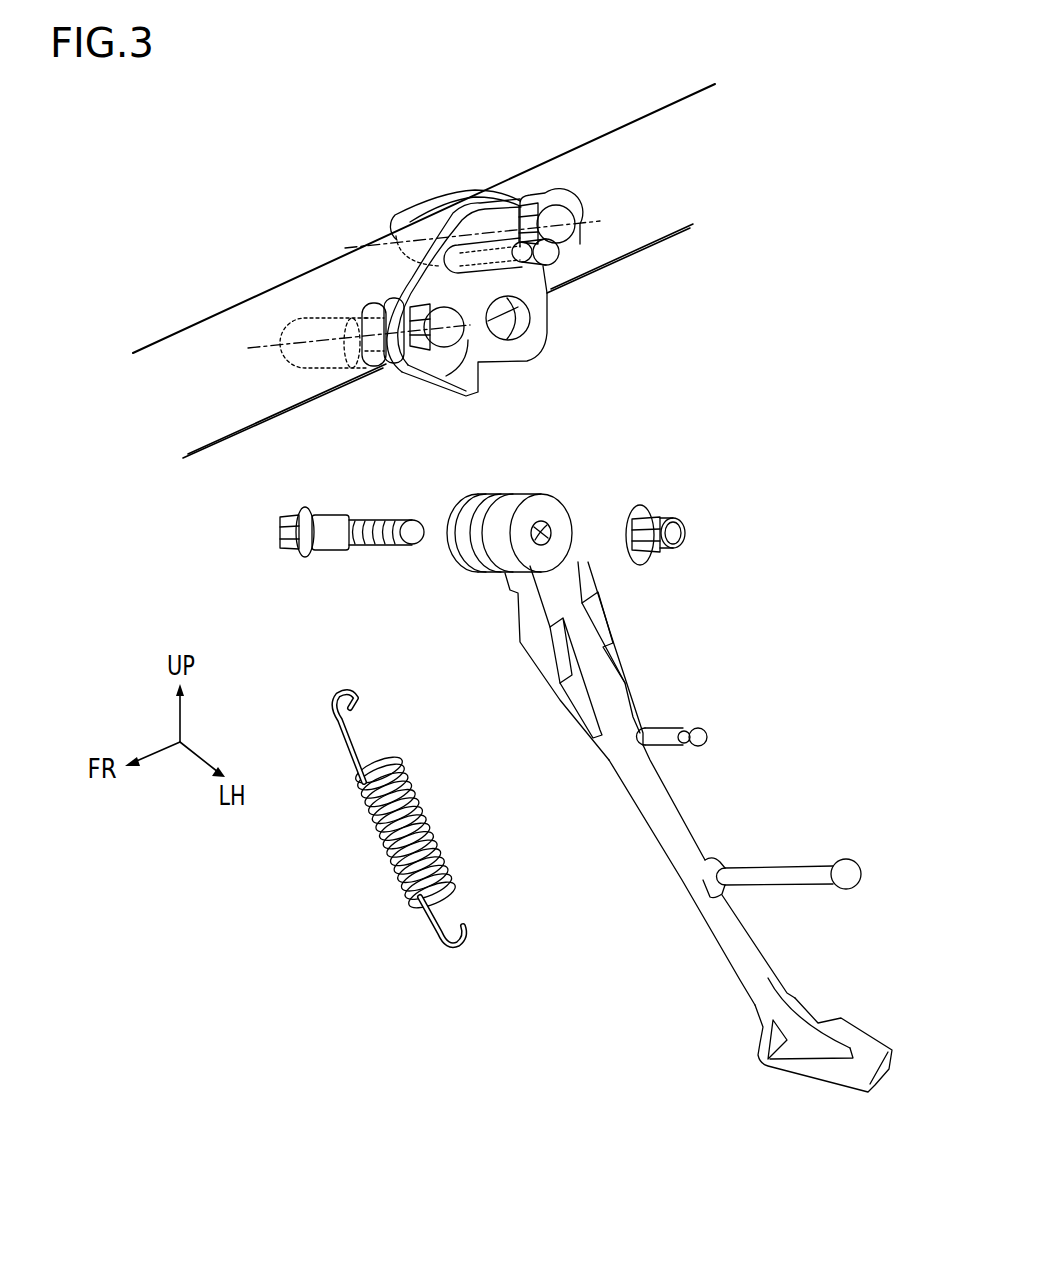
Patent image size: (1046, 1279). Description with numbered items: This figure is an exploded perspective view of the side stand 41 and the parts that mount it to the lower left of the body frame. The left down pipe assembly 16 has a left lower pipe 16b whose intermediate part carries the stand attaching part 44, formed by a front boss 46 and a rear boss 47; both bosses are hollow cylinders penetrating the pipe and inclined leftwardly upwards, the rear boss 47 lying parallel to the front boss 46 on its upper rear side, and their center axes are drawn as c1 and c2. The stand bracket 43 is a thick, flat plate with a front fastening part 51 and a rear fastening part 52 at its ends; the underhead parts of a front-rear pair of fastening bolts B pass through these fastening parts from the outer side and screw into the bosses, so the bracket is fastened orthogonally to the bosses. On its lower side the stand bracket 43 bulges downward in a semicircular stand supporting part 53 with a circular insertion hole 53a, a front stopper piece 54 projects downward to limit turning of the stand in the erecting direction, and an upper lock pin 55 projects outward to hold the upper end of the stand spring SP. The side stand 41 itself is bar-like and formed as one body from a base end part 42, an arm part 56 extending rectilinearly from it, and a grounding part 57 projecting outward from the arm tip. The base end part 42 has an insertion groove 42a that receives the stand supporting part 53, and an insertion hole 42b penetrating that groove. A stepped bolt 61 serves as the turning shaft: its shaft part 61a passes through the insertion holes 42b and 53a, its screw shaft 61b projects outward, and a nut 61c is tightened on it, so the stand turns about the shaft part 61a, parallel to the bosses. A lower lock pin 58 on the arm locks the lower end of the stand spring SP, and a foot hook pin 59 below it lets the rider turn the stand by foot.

The left down pipe assembly 16 is at (146, 345).
The left lower pipe 16b is at (188, 342).
The stand attaching part 44 is at (322, 266).
The center axis of front boss c1 is at (263, 347).
The center axis of rear boss c2 is at (358, 249).
The front boss 46 is at (383, 362).
The front fastening part 51 is at (401, 370).
The stand bracket 43 is at (516, 295).
The rear boss 47 is at (455, 208).
The stand supporting part 53 is at (539, 352).
The insertion hole 53a is at (505, 331).
The front stopper piece 54 is at (472, 392).
The fastening bolt B is at (452, 338).
The rear fastening part 52 is at (513, 200).
The upper lock pin 55 is at (562, 239).
The stepped bolt 61 is at (334, 574).
The shaft part 61a is at (334, 541).
The screw shaft 61b is at (386, 546).
The nut 61c is at (660, 517).
The side stand 41 is at (665, 789).
The base end part 42 is at (541, 598).
The insertion groove 42a is at (499, 490).
The insertion hole 42b is at (548, 527).
The arm part 56 is at (660, 826).
The lower lock pin 58 is at (674, 729).
The foot hook pin 59 is at (797, 872).
The grounding part 57 is at (815, 1062).
The stand spring SP is at (385, 855).